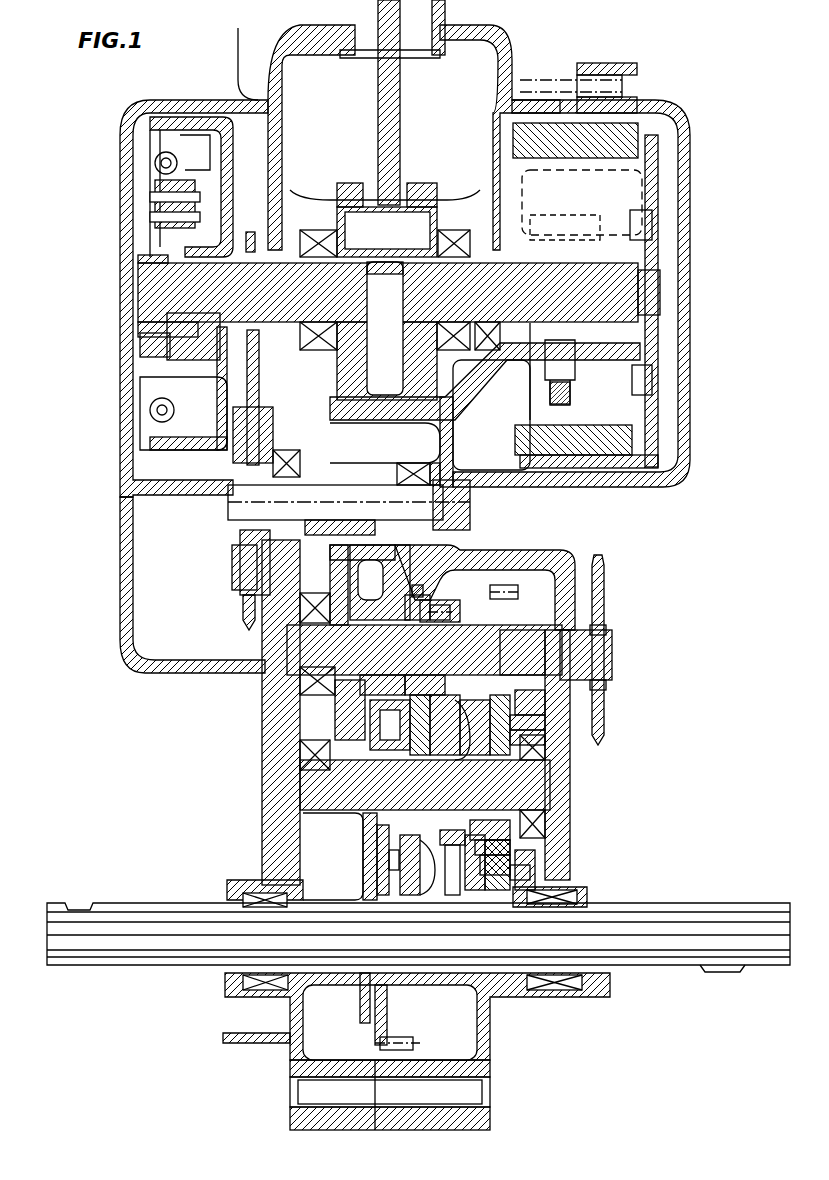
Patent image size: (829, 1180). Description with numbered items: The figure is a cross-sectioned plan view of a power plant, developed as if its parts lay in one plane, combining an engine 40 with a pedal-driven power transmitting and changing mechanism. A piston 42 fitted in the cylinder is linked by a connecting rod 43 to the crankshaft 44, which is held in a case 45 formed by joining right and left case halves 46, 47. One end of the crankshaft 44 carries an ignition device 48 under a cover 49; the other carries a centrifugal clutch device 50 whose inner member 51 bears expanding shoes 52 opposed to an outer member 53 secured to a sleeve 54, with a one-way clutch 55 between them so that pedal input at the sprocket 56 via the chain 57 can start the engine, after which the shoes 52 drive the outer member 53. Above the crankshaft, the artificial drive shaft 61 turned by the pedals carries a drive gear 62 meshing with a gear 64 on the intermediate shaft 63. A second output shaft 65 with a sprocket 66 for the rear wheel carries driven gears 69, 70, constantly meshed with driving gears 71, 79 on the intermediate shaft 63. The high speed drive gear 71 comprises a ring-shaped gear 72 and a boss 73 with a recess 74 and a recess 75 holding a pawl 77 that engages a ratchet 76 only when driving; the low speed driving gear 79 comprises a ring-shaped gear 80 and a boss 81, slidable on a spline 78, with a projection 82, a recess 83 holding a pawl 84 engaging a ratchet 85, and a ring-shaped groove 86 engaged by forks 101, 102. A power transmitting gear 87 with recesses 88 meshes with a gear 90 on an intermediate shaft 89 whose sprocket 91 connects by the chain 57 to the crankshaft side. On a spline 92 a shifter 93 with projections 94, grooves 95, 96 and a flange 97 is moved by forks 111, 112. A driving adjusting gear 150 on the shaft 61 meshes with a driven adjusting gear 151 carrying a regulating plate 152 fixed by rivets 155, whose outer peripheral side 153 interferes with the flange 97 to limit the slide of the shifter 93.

The engine 40 is at (535, 45).
The piston 42 is at (438, 40).
The connecting rod 43 is at (385, 72).
The crankshaft 44 is at (530, 330).
The case 45 is at (465, 483).
The case half 46 is at (265, 700).
The case half 47 is at (582, 776).
The ignition device 48 is at (607, 403).
The cover 49 is at (686, 185).
The centrifugal clutch device 50 is at (135, 256).
The inner member 51 is at (145, 345).
The centrifugally expanding type shoes 52 is at (165, 152).
The outer member 53 is at (187, 118).
The sleeve 54 is at (200, 252).
The one-way clutch 55 is at (195, 345).
The sprocket 56 is at (250, 240).
The chain 57 is at (262, 360).
The artificial drive shaft 61 is at (138, 965).
The drive gear 62 is at (413, 1043).
The intermediate shaft 63 is at (265, 793).
The gear 64 is at (418, 758).
The second output shaft 65 is at (612, 652).
The sprocket 66 is at (605, 592).
The driven gear 69 is at (540, 562).
The driven gear 70 is at (442, 610).
The high speed drive gear 71 is at (435, 900).
The ring-shaped gear 72 is at (470, 898).
The boss 73 is at (495, 898).
The recess 74 is at (375, 852).
The recess 75 is at (475, 758).
The ratchet 76 is at (460, 715).
The pawl 77 is at (535, 652).
The spline 78 is at (500, 758).
The low speed driving gear 79 is at (525, 898).
The ring-shaped gear 80 is at (560, 890).
The boss 81 is at (548, 800).
The projection 82 is at (565, 875).
The recess 83 is at (535, 790).
The pawl 84 is at (548, 728).
The ratchet 85 is at (548, 742).
The ring-shaped groove 86 is at (555, 860).
The power transmitting gear 87 is at (255, 573).
The recesses 88 is at (292, 652).
The intermediate shaft 89 is at (264, 504).
The gear 90 is at (345, 490).
The sprocket 91 is at (245, 616).
The spline 92 is at (370, 545).
The shifter 93 is at (508, 588).
The projections 94 is at (398, 677).
The groove 95 is at (436, 567).
The groove 96 is at (398, 752).
The flange 97 is at (345, 735).
The fork 101 is at (545, 705).
The fork 102 is at (560, 855).
The fork 111 is at (455, 630).
The fork 112 is at (410, 595).
The driving adjusting gear 150 is at (371, 1015).
The driven adjusting gear 151 is at (372, 840).
The regulating plate 152 is at (392, 900).
The outer peripheral side 153 is at (345, 705).
The rivets 155 is at (425, 785).